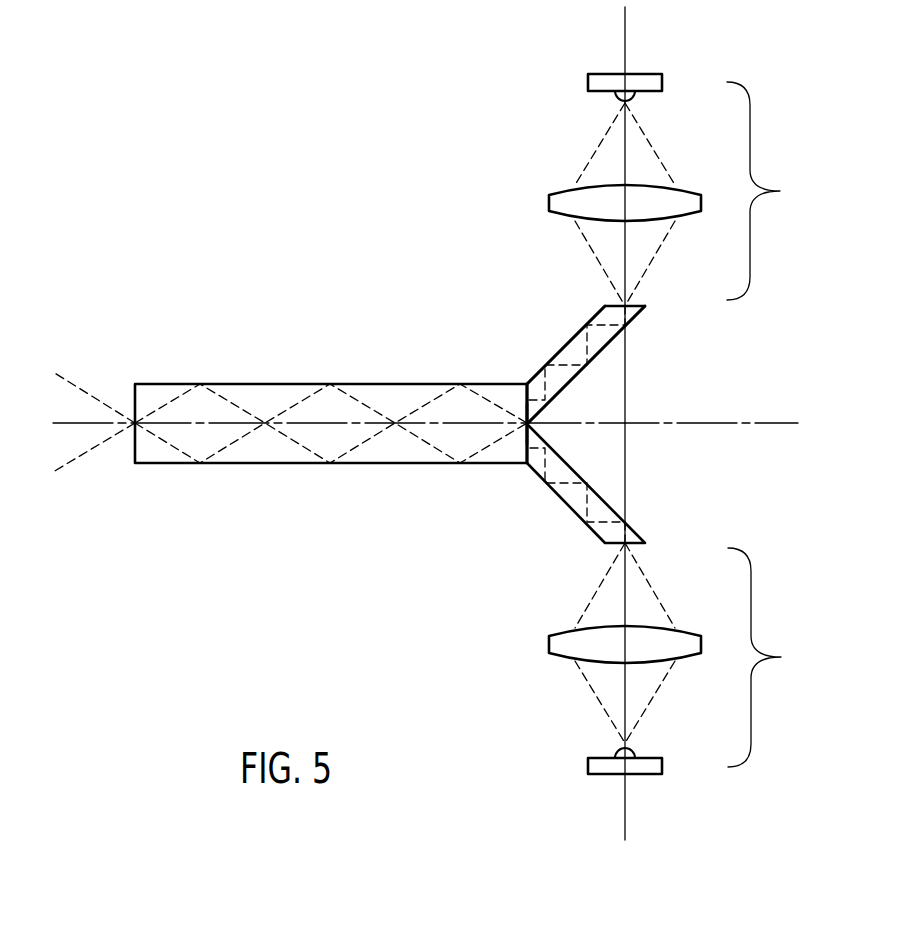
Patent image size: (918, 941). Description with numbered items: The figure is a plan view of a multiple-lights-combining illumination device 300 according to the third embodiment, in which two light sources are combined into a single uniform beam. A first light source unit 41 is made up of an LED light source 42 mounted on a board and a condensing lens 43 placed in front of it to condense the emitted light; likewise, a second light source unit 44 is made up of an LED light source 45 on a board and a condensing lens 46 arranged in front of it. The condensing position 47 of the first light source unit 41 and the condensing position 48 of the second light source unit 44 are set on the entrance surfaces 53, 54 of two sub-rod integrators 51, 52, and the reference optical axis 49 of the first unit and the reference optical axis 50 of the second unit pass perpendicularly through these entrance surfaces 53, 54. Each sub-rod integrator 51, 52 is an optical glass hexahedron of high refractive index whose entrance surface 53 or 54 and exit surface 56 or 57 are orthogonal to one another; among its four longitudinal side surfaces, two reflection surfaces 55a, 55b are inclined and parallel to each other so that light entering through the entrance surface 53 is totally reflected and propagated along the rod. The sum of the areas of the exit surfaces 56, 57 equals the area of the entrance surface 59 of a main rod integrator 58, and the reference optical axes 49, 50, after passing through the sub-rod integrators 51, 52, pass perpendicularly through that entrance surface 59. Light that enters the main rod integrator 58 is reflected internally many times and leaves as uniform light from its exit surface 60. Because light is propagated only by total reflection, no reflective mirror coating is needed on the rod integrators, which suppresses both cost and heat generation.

The multiple-lights-combining illumination device 300 is at (321, 329).
The first light source unit 41 is at (769, 191).
The LED light source 42 is at (590, 87).
The condensing lens 43 is at (549, 203).
The second light source unit 44 is at (769, 657).
The LED light source 45 is at (588, 768).
The condensing lens 46 is at (549, 645).
The condensing position 47 is at (618, 302).
The condensing position 48 is at (612, 546).
The reference optical axis 49 is at (628, 35).
The reference optical axis 50 is at (628, 808).
The sub-rod integrator 51 is at (572, 345).
The sub-rod integrator 52 is at (565, 493).
The entrance surface 53 is at (640, 302).
The entrance surface 54 is at (640, 546).
The reflection surface 55a is at (535, 372).
The reflection surface 55b is at (607, 345).
The exit surface 56 is at (530, 392).
The exit surface 57 is at (530, 450).
The main rod integrator 58 is at (158, 390).
The entrance surface 59 is at (522, 445).
The exit surface 60 is at (132, 430).